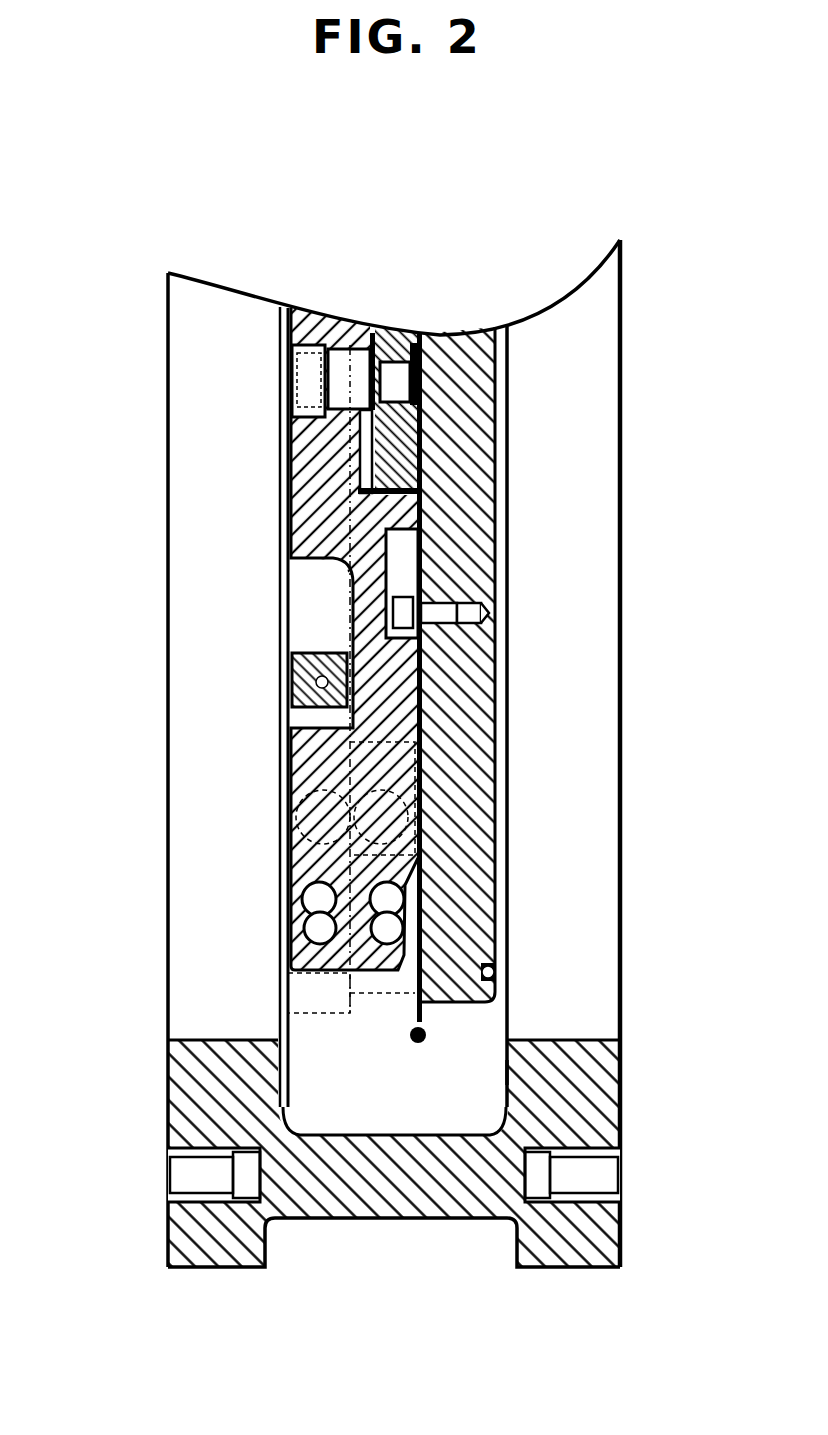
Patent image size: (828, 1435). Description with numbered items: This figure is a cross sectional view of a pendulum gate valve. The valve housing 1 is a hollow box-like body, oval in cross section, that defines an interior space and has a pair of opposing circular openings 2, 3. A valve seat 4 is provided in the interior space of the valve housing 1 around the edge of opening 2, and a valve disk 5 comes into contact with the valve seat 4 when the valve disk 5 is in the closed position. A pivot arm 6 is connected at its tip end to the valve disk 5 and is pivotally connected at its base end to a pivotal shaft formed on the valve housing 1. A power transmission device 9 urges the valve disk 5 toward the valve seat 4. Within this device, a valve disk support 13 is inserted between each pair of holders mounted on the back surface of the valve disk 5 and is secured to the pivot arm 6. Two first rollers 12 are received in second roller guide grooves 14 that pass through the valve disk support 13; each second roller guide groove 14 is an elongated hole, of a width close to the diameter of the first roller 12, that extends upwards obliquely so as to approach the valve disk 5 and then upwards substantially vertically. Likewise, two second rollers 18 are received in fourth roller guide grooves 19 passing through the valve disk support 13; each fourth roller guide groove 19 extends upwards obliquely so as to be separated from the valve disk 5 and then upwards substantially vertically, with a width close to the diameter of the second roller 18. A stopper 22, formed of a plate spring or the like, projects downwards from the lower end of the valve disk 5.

The valve housing 1 is at (595, 1237).
The circular opening 2 is at (590, 900).
The circular opening 3 is at (192, 945).
The valve seat 4 is at (512, 1082).
The valve disk 5 is at (465, 731).
The pivot arm 6 is at (385, 457).
The power transmission device 9 is at (328, 1026).
The first roller 12 is at (390, 930).
The valve disk support 13 is at (318, 765).
The second roller guide groove 14 is at (408, 878).
The second roller 18 is at (320, 930).
The fourth roller guide groove 19 is at (313, 884).
The stopper 22 is at (418, 1035).